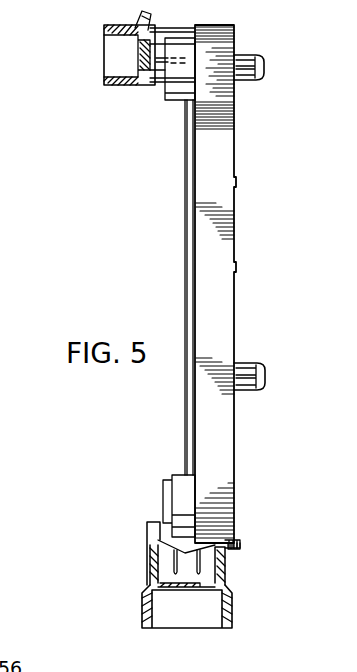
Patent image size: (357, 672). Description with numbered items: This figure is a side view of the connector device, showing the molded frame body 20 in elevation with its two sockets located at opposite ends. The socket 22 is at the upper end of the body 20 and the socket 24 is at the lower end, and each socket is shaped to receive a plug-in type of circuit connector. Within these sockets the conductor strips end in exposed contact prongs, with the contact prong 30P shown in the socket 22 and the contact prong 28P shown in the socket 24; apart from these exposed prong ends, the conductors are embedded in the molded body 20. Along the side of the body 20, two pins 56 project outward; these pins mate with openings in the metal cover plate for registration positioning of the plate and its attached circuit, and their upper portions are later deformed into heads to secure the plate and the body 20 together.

The molded frame body 20 is at (236, 232).
The socket 22 is at (106, 22).
The contact prong 30P is at (160, 58).
The pin 56 is at (264, 65).
The contact prong 28P is at (148, 570).
The socket 24 is at (142, 607).